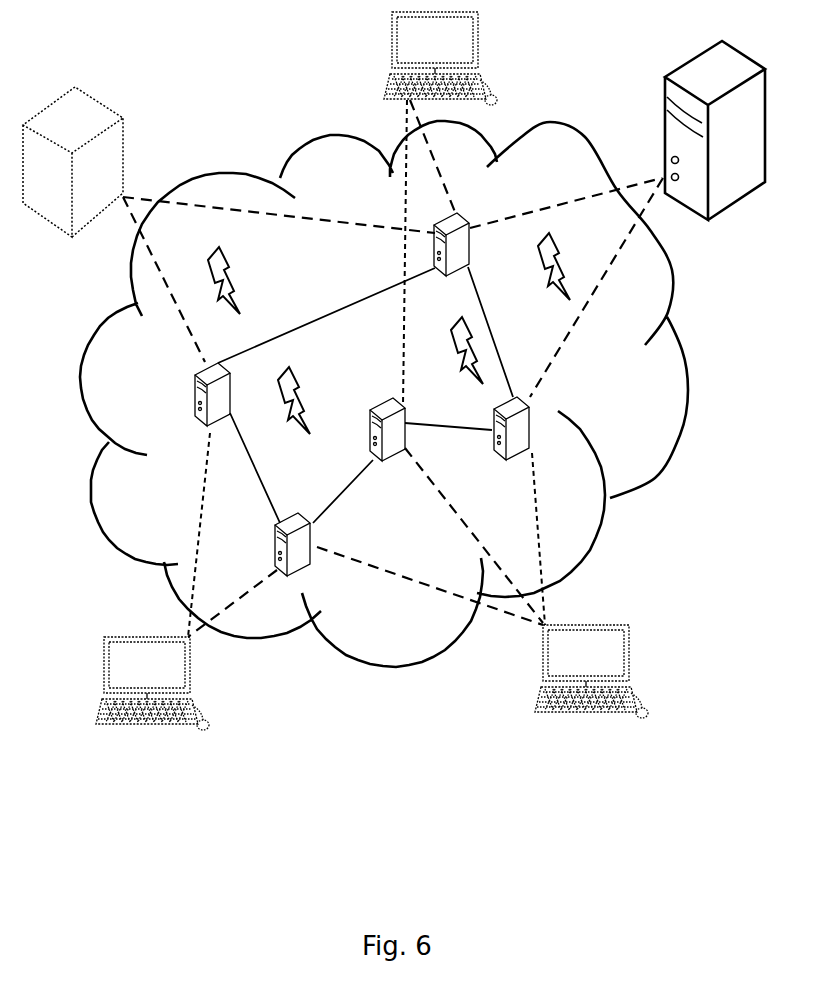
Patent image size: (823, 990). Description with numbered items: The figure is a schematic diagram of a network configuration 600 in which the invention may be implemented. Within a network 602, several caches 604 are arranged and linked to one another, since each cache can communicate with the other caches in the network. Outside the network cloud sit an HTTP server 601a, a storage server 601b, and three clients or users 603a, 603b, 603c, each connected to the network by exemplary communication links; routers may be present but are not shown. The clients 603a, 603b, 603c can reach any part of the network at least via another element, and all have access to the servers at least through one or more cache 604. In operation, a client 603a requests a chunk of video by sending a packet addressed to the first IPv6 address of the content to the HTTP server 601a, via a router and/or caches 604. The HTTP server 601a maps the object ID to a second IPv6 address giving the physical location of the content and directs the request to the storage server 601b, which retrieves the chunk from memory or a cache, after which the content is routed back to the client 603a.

The network configuration 600 is at (228, 73).
The network 602 is at (384, 394).
The caches 604 is at (343, 382).
The HTTP server 601a is at (715, 130).
The storage server 601b is at (73, 162).
The client 603a is at (440, 58).
The client 603b is at (152, 683).
The client 603c is at (591, 671).